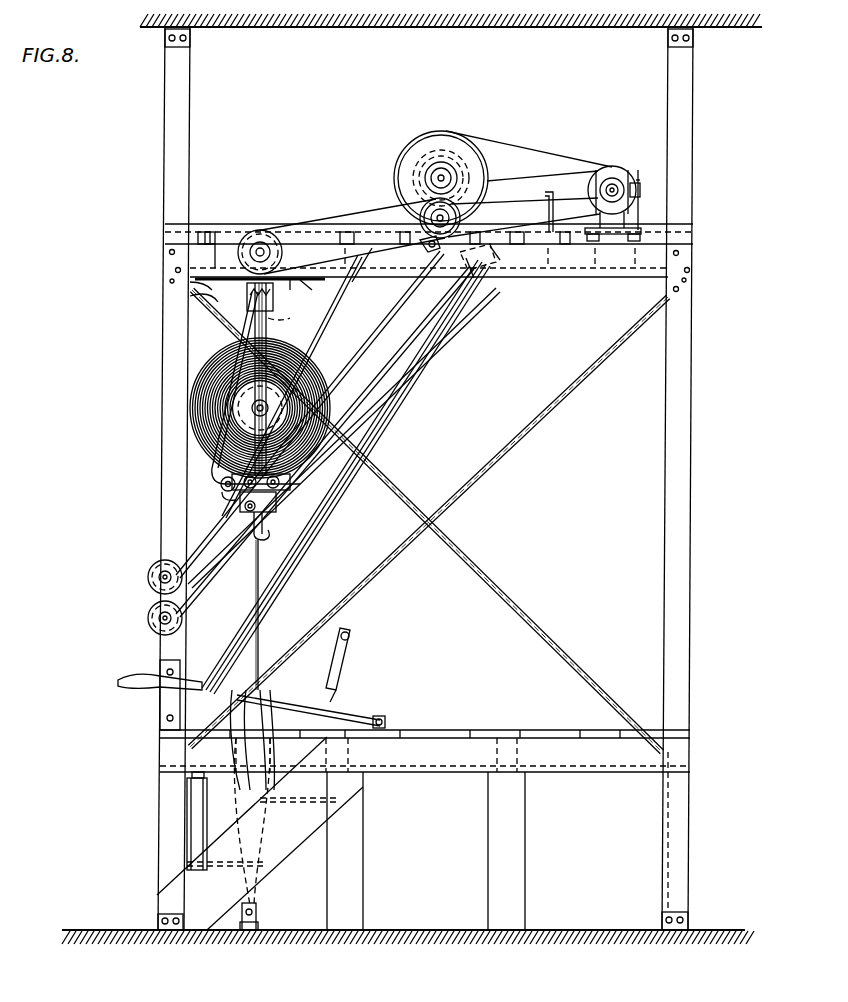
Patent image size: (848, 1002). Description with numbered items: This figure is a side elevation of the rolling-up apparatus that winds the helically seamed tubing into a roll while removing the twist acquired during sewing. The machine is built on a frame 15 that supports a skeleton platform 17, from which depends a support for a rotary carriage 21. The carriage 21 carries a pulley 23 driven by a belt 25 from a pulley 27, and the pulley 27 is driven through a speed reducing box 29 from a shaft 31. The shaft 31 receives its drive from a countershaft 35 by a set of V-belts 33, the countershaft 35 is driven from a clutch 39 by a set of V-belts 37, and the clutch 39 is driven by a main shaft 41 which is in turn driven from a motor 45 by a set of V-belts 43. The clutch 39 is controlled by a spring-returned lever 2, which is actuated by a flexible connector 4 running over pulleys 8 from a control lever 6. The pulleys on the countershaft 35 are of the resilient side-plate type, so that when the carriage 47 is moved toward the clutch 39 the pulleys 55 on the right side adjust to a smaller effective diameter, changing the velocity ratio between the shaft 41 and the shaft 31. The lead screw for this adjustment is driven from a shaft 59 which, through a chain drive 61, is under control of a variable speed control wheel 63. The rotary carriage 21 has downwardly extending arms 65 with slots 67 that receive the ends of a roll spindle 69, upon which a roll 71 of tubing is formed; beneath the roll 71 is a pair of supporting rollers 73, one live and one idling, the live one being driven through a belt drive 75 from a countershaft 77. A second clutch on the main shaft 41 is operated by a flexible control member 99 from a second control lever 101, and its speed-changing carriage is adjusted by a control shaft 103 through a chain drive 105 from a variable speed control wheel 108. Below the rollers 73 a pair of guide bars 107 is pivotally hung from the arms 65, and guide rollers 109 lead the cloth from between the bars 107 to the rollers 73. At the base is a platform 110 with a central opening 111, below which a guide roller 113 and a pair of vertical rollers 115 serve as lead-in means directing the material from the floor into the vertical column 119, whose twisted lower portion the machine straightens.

The spring-returned lever 2 is at (544, 193).
The flexible connector 4 is at (388, 385).
The control lever 6 is at (200, 688).
The pulleys 8 is at (472, 282).
The frame 15 is at (175, 192).
The skeleton platform 17 is at (330, 236).
The rotary carriage 21 is at (270, 290).
The pulley 23 is at (188, 283).
The belt 25 is at (195, 296).
The pulley 27 is at (293, 284).
The speed reducing box 29 is at (212, 238).
The shaft 31 is at (258, 247).
The set of V-belts 33 is at (373, 218).
The countershaft 35 is at (432, 202).
The set of V-belts 37 is at (522, 178).
The clutch 39 is at (606, 166).
The main shaft 41 is at (613, 170).
The set of V-belts 43 is at (503, 160).
The motor 45 is at (426, 146).
The carriage 47 is at (428, 240).
The pulleys 55 is at (438, 238).
The shaft 59 is at (505, 262).
The chain drive 61 is at (428, 316).
The variable speed control wheel 63 is at (150, 618).
The downwardly extending arms 65 is at (268, 326).
The slots 67 is at (232, 376).
The roll spindle 69 is at (256, 409).
The roll of tubing 71 is at (204, 424).
The supporting rollers 73 is at (280, 488).
The belt drive 75 is at (252, 332).
The countershaft 77 is at (280, 317).
The flexible control member 99 is at (386, 388).
The second control lever 101 is at (240, 690).
The control shaft 103 is at (360, 270).
The chain drive 105 is at (328, 316).
The guide bars 107 is at (282, 601).
The variable speed control wheel 108 is at (150, 572).
The guide rollers 109 is at (220, 494).
The platform 110 is at (483, 728).
The central opening 111 is at (318, 722).
The guide roller 113 is at (212, 915).
The vertical rollers 115 is at (188, 826).
The vertical column of material 119 is at (238, 780).